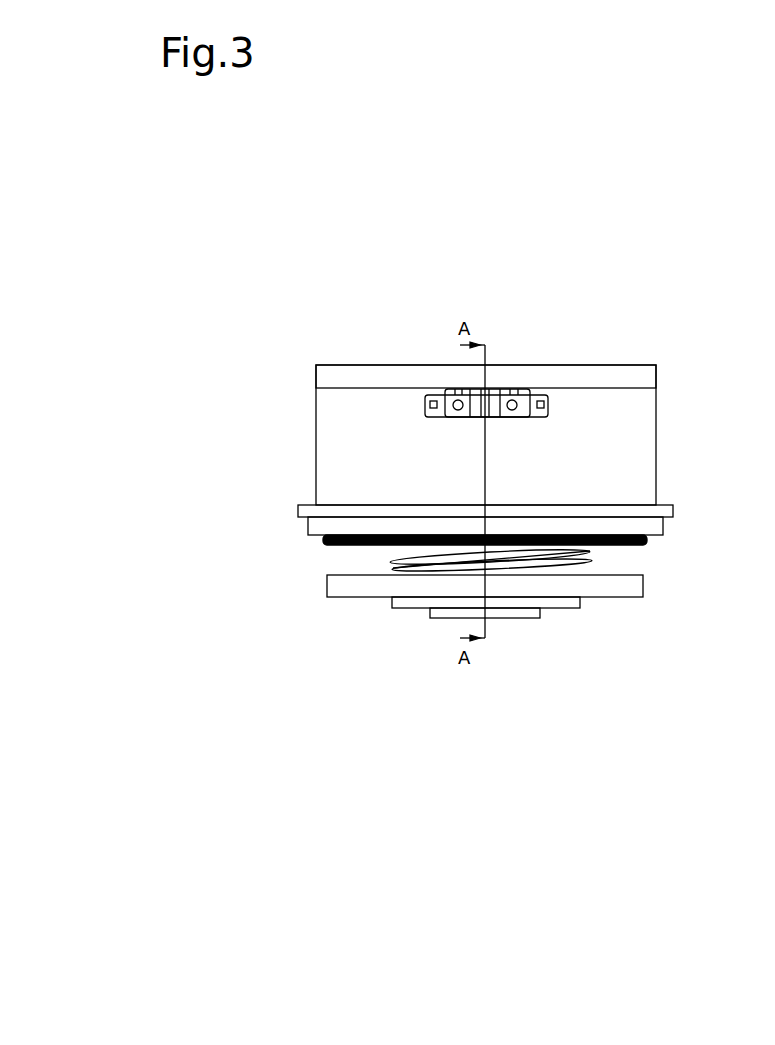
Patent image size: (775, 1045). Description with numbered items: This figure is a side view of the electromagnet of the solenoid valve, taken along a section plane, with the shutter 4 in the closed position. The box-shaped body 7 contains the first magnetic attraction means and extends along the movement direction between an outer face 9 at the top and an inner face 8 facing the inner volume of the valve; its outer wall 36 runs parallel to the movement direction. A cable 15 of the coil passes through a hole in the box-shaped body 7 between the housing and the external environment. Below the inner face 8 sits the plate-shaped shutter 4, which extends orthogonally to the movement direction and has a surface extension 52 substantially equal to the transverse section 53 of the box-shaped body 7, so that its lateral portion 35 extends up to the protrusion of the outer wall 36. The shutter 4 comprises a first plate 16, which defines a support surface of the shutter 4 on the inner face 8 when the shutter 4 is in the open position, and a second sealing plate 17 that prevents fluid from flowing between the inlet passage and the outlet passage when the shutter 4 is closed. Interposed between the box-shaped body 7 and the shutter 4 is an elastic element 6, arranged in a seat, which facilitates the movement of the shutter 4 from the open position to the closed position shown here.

The shutter 4 is at (501, 707).
The elastic element 6 is at (390, 564).
The box-shaped body 7 is at (280, 372).
The inner face 8 is at (660, 548).
The outer face 9 is at (625, 377).
The cable 15 is at (455, 398).
The first plate 16 is at (358, 594).
The second sealing plate 17 is at (400, 602).
The lateral portion 35 is at (593, 602).
The outer wall 36 is at (340, 457).
The surface extension 52 is at (633, 578).
The transverse section 53 is at (314, 547).